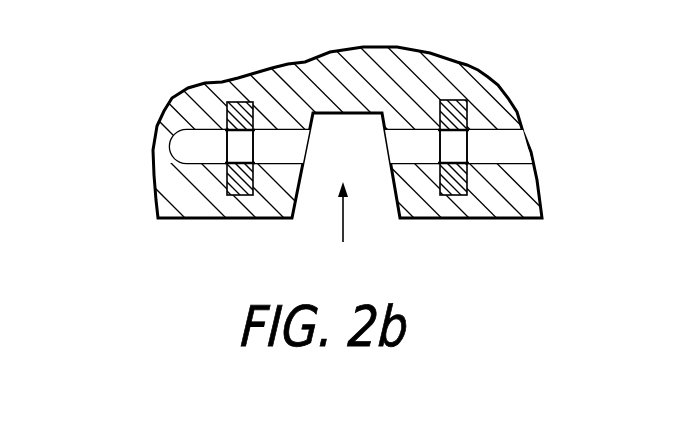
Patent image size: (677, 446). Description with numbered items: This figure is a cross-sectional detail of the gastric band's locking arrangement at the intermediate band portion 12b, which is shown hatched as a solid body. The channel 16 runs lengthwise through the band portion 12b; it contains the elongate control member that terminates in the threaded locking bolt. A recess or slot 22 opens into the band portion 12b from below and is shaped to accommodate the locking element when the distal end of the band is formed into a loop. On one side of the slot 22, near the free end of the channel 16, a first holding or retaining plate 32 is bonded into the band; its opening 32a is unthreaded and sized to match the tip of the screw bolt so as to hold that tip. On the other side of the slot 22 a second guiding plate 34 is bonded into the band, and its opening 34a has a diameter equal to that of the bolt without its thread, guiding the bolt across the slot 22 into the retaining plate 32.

The intermediate band portion 12b is at (493, 108).
The channel 16 is at (282, 130).
The recess or slot 22 is at (343, 230).
The holding or retaining plate 32 is at (240, 130).
The opening 32a is at (238, 147).
The guiding plate 34 is at (447, 102).
The opening 34a is at (453, 152).